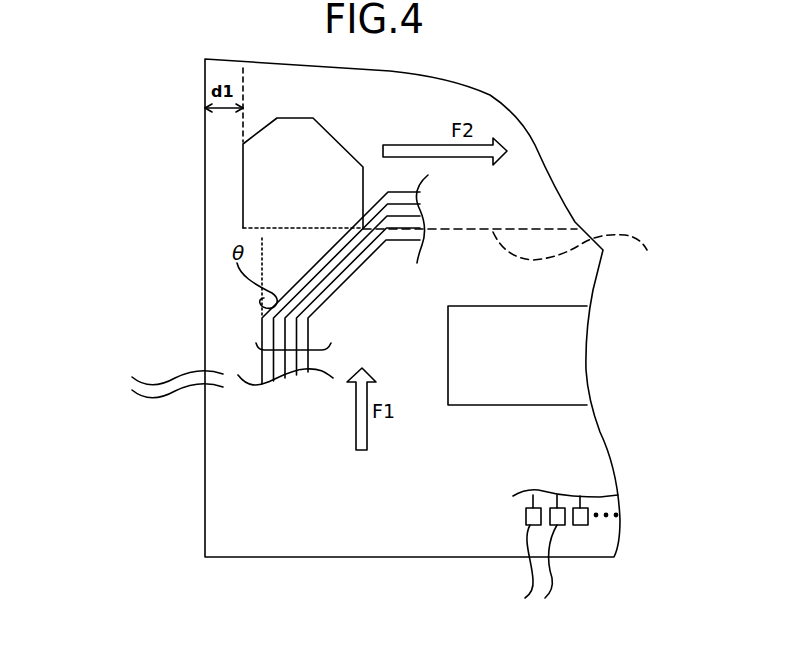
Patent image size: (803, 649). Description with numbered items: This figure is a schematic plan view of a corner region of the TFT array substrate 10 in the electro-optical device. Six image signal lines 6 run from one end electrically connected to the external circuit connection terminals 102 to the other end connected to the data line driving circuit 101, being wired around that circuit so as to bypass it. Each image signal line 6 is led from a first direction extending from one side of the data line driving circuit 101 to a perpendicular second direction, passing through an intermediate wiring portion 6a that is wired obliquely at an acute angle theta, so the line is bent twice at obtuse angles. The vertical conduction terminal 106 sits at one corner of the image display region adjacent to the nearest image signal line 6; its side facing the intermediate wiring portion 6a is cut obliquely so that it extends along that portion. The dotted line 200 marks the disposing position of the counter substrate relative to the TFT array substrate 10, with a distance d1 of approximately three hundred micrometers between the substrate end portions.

The TFT array substrate 10 is at (223, 531).
The vertical conduction terminal 106 is at (315, 148).
The image signal line 6 is at (288, 362).
The intermediate wiring portion 6a is at (310, 268).
The dotted line 200 is at (522, 252).
The data line driving circuit 101 is at (553, 407).
The external circuit connection terminal 102 is at (564, 562).